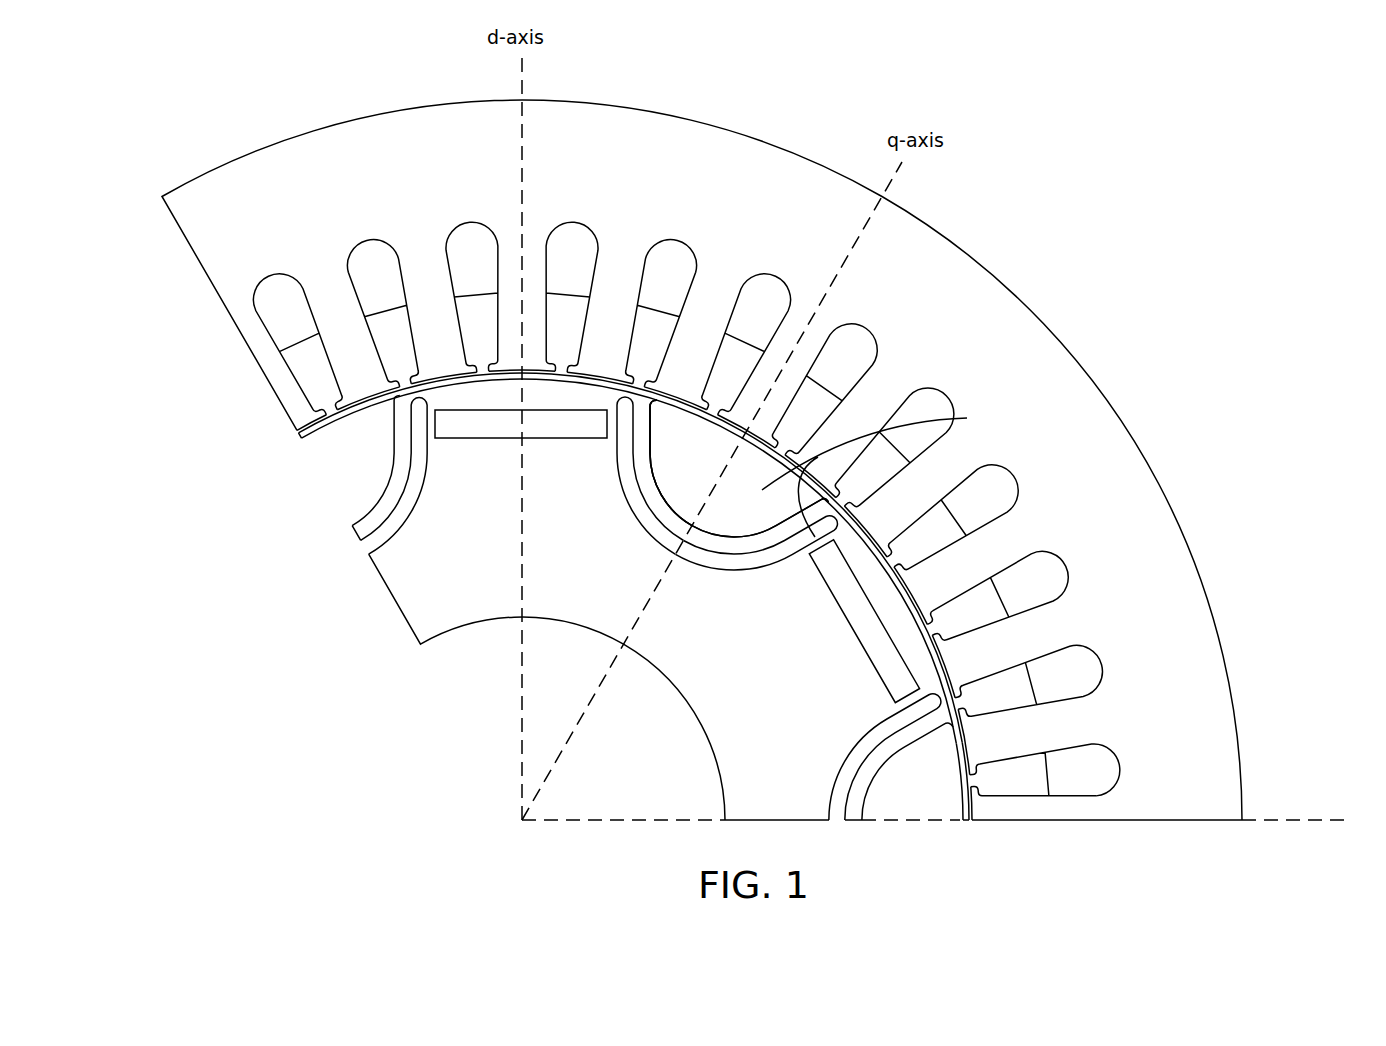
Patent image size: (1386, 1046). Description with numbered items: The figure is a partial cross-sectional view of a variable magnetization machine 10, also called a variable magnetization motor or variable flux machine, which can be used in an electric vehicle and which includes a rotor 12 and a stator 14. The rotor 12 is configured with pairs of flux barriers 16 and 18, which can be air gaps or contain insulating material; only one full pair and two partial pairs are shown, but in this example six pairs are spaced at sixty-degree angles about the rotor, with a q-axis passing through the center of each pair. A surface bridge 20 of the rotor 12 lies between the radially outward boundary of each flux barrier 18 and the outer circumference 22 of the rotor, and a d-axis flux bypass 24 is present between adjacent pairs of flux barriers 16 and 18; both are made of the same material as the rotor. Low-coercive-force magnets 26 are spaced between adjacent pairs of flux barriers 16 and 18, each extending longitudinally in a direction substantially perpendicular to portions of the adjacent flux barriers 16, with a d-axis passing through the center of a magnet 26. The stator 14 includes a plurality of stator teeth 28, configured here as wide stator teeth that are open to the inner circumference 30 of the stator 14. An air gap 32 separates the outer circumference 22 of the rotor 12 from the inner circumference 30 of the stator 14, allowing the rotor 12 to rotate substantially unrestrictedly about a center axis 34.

The variable magnetization machine 10 is at (1147, 214).
The rotor 12 is at (795, 770).
The stator 14 is at (300, 203).
The flux barrier 16 is at (768, 557).
The flux barrier 18 is at (733, 513).
The surface bridge 20 is at (660, 375).
The outer circumference 22 is at (684, 400).
The d-axis flux bypass 24 is at (641, 461).
The low-coercive-force magnet 26 is at (477, 423).
The stator teeth 28 is at (538, 262).
The inner circumference 30 is at (313, 432).
The air gap 32 is at (968, 821).
The center axis 34 is at (522, 820).